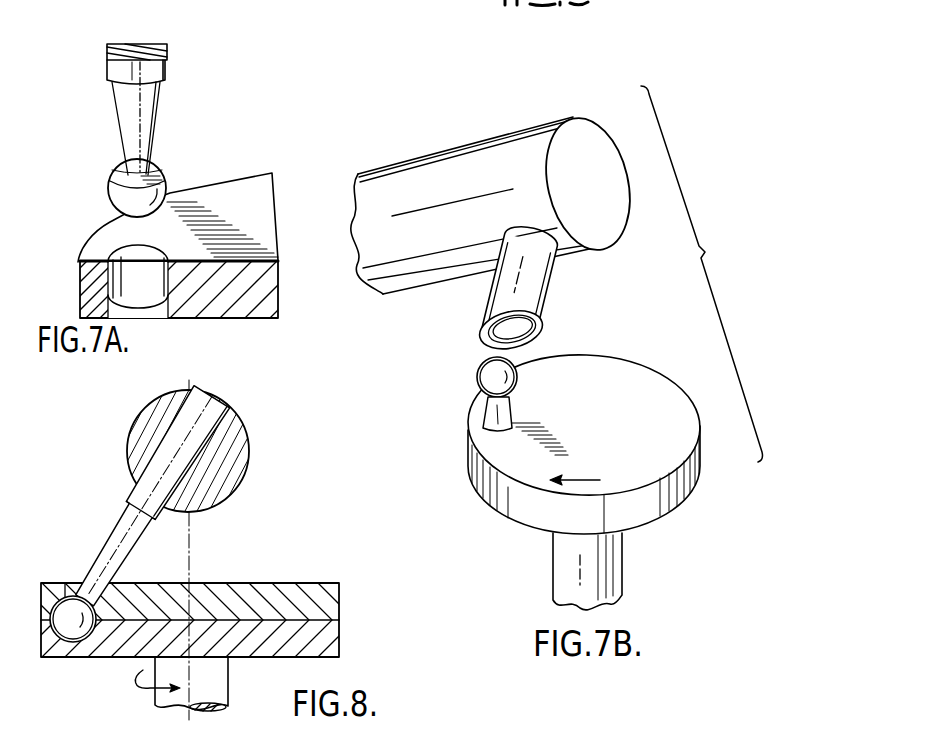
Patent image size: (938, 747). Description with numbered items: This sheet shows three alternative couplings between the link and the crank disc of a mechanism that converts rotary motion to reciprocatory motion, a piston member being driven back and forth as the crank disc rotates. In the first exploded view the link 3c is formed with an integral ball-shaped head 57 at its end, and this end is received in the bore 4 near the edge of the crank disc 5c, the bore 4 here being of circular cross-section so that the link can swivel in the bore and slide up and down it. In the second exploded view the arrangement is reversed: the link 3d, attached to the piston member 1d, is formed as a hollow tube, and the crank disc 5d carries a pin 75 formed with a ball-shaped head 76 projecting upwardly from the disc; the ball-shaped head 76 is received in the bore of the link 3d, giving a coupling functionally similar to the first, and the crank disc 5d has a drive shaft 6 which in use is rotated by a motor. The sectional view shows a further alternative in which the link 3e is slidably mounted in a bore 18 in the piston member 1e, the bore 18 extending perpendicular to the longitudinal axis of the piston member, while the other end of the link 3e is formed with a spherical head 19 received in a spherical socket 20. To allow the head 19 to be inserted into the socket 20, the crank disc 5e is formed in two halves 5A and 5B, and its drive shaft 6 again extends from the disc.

In FIG. 7A, the link 3c is at (146, 113).
In FIG. 7A, the ball-shaped head 57 is at (157, 190).
In FIG. 7A, the crank disc 5c is at (243, 185).
In FIG. 7A, the bore 4 is at (160, 287).
In FIG. 7B, the piston member 1d is at (592, 137).
In FIG. 7B, the link 3d is at (541, 283).
In FIG. 7B, the crank disc 5d is at (677, 397).
In FIG. 7B, the drive shaft 6 is at (567, 568).
In FIG. 8, the drive shaft 6 is at (220, 679).
In FIG. 7B, the ball-shaped head 76 is at (483, 372).
In FIG. 7B, the pin 75 is at (490, 413).
In FIG. 8, the piston member 1e is at (238, 453).
In FIG. 8, the link 3e is at (120, 545).
In FIG. 8, the bore 18 is at (203, 403).
In FIG. 8, the spherical head 19 is at (60, 603).
In FIG. 8, the spherical socket 20 is at (94, 641).
In FIG. 8, the crank disc 5e is at (254, 583).
In FIG. 8, the first half of crank disc 5A is at (331, 600).
In FIG. 8, the second half of crank disc 5B is at (330, 643).